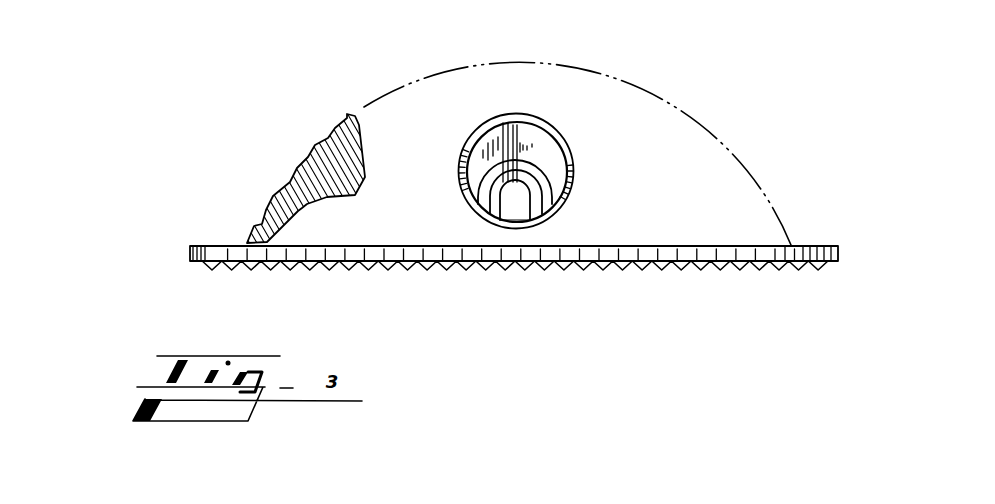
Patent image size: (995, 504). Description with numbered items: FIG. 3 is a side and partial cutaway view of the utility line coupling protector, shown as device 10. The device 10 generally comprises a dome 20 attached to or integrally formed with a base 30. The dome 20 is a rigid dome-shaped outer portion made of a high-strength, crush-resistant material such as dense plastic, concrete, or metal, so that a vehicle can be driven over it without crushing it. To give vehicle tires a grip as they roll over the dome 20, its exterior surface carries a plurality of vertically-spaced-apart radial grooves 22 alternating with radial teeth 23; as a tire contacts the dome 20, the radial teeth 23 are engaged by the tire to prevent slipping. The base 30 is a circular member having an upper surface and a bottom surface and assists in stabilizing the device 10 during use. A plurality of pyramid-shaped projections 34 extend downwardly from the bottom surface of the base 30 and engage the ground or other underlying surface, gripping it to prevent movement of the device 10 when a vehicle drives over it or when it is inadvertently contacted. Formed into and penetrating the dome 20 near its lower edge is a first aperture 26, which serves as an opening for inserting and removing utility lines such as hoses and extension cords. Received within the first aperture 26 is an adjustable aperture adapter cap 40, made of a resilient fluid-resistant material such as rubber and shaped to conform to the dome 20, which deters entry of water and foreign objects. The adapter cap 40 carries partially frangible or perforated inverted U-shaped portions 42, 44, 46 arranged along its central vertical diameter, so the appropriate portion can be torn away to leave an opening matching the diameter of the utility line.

The device 10 is at (150, 74).
The dome 20 is at (530, 63).
The radial grooves 22 is at (317, 147).
The radial teeth 23 is at (290, 172).
The base 30 is at (838, 254).
The pyramid-shaped projections 34 is at (797, 265).
The adjustable aperture adapter cap 40 is at (553, 155).
The inverted U-shaped portion 42 is at (553, 134).
The inverted U-shaped portion 44 is at (553, 196).
The inverted U-shaped portion 46 is at (492, 202).
The first aperture 26 is at (512, 212).